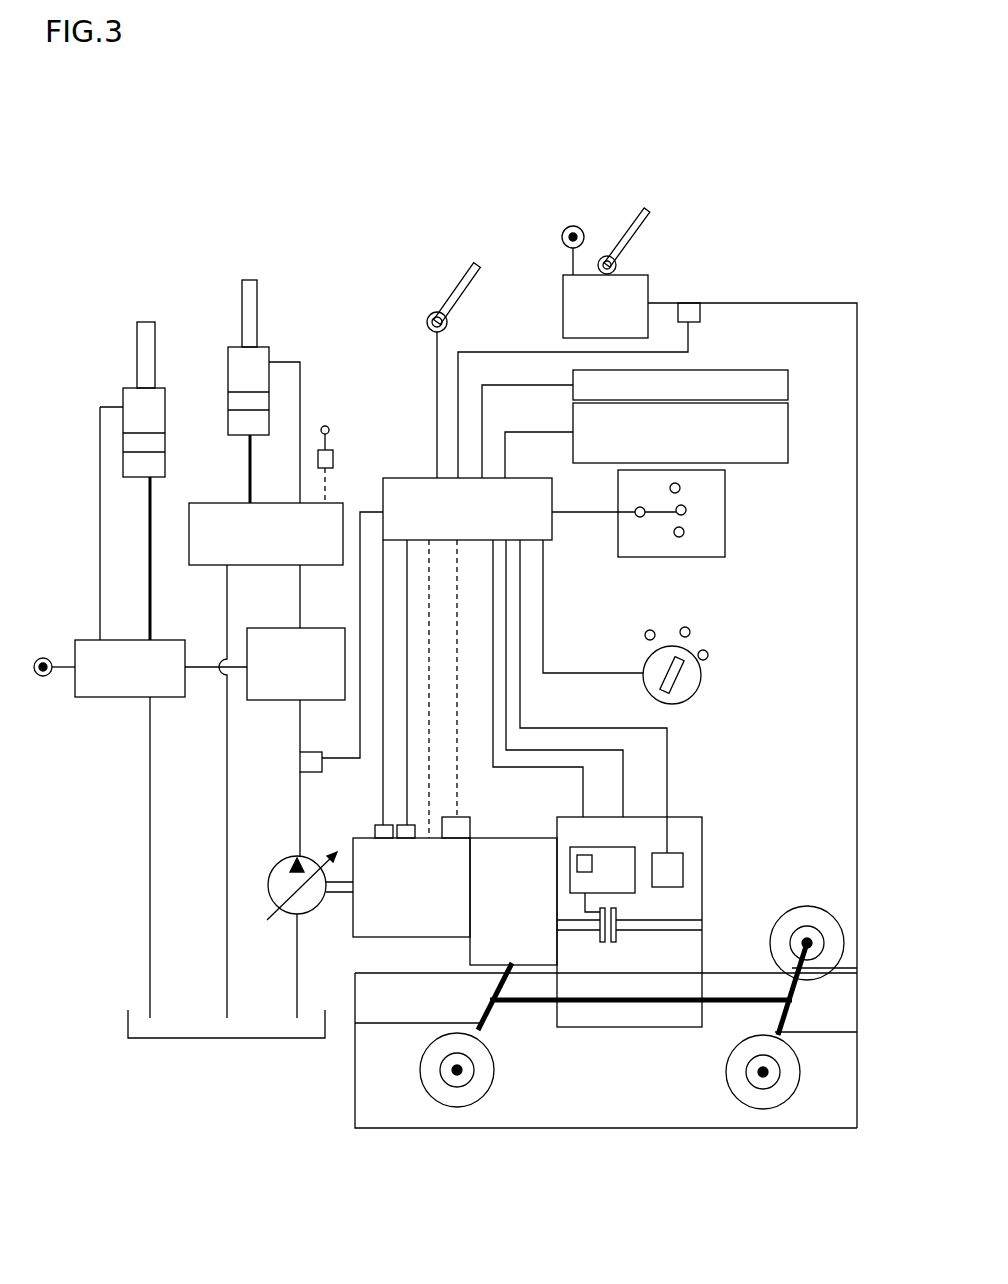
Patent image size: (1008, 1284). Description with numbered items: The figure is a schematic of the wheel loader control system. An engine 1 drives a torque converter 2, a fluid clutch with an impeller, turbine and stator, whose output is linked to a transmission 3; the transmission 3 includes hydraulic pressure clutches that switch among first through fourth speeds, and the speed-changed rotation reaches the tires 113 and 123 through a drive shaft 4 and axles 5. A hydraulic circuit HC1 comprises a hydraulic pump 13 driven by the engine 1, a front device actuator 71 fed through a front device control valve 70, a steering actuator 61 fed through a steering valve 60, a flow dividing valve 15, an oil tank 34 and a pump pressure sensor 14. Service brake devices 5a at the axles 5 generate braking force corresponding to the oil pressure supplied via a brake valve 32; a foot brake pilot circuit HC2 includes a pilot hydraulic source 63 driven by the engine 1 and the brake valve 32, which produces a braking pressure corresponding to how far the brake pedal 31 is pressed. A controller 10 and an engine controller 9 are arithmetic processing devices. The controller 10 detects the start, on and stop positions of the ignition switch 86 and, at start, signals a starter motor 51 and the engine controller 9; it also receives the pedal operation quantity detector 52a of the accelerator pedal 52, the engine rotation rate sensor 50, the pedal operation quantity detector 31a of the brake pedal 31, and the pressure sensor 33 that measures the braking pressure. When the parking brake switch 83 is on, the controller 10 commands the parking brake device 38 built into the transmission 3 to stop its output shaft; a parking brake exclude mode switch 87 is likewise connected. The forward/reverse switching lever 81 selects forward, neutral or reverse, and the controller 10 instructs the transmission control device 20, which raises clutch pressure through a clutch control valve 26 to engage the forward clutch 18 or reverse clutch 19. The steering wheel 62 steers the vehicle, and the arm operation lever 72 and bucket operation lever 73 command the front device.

The engine 1 is at (353, 922).
The torque converter 2 is at (533, 838).
The transmission 3 is at (702, 893).
The drive shaft 4 is at (535, 1005).
The axle 5 is at (485, 1000).
The service brake device 5a is at (470, 1072).
The engine controller 9 is at (470, 817).
The controller 10 is at (412, 478).
The hydraulic pump 13 is at (320, 858).
The pump pressure sensor 14 is at (322, 753).
The flow dividing valve 15 is at (320, 628).
The forward clutch 18 is at (601, 940).
The reverse clutch 19 is at (615, 940).
The transmission control device 20 is at (590, 844).
The clutch control valve 26 is at (578, 855).
The brake pedal 31 is at (641, 230).
The pedal operation quantity detector 31a is at (620, 268).
The brake valve 32 is at (563, 300).
The pressure sensor 33 is at (700, 322).
The oil tank 34 is at (178, 1040).
The parking brake device 38 is at (683, 870).
The engine rotation rate sensor 50 is at (380, 825).
The starter motor 51 is at (400, 825).
The accelerator pedal 52 is at (428, 290).
The pedal operation quantity detector 52a is at (427, 318).
The steering valve 60 is at (84, 698).
The steering actuator 61 is at (168, 406).
The steering wheel 62 is at (46, 658).
The pilot hydraulic source 63 is at (564, 228).
The front device control valve 70 is at (213, 503).
The front device actuator 71 is at (272, 355).
The arm operation lever 72 is at (357, 450).
The bucket operation lever 73 is at (333, 450).
The forward/reverse switching lever 81 is at (728, 515).
The parking brake switch 83 is at (790, 370).
The ignition switch 86 is at (700, 690).
The parking brake exclude mode switch 87 is at (789, 422).
The tire 113 is at (812, 905).
The tire 123 is at (420, 1068).
The hydraulic circuit HC1 is at (80, 550).
The foot brake pilot circuit HC2 is at (865, 975).